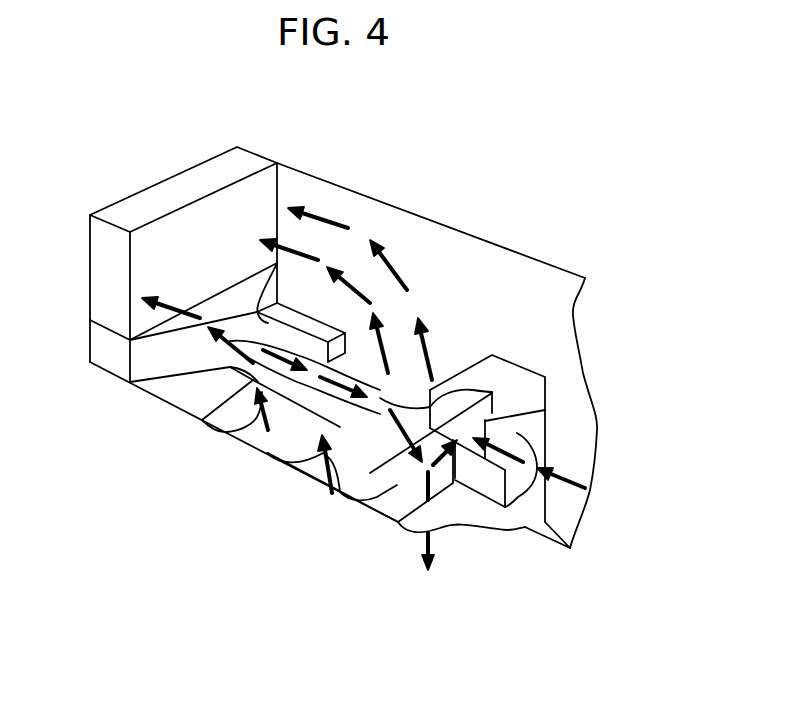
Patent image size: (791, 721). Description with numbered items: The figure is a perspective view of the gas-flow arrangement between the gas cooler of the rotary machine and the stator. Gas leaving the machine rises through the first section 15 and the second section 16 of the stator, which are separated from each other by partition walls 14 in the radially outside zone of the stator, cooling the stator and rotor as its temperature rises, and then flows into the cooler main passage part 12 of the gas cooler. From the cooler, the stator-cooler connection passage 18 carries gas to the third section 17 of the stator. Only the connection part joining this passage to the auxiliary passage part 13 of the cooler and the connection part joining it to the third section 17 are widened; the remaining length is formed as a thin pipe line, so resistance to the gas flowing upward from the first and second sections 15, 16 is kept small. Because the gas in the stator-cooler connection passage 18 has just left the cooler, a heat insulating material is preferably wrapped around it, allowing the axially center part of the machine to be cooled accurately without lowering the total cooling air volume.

The cooler main passage part 12 is at (248, 190).
The auxiliary passage part 13 is at (108, 359).
The partition walls 14 is at (215, 422).
The first section 15 is at (250, 430).
The second section 16 is at (310, 473).
The third section 17 is at (392, 507).
The stator-cooler connection passage 18 is at (397, 373).